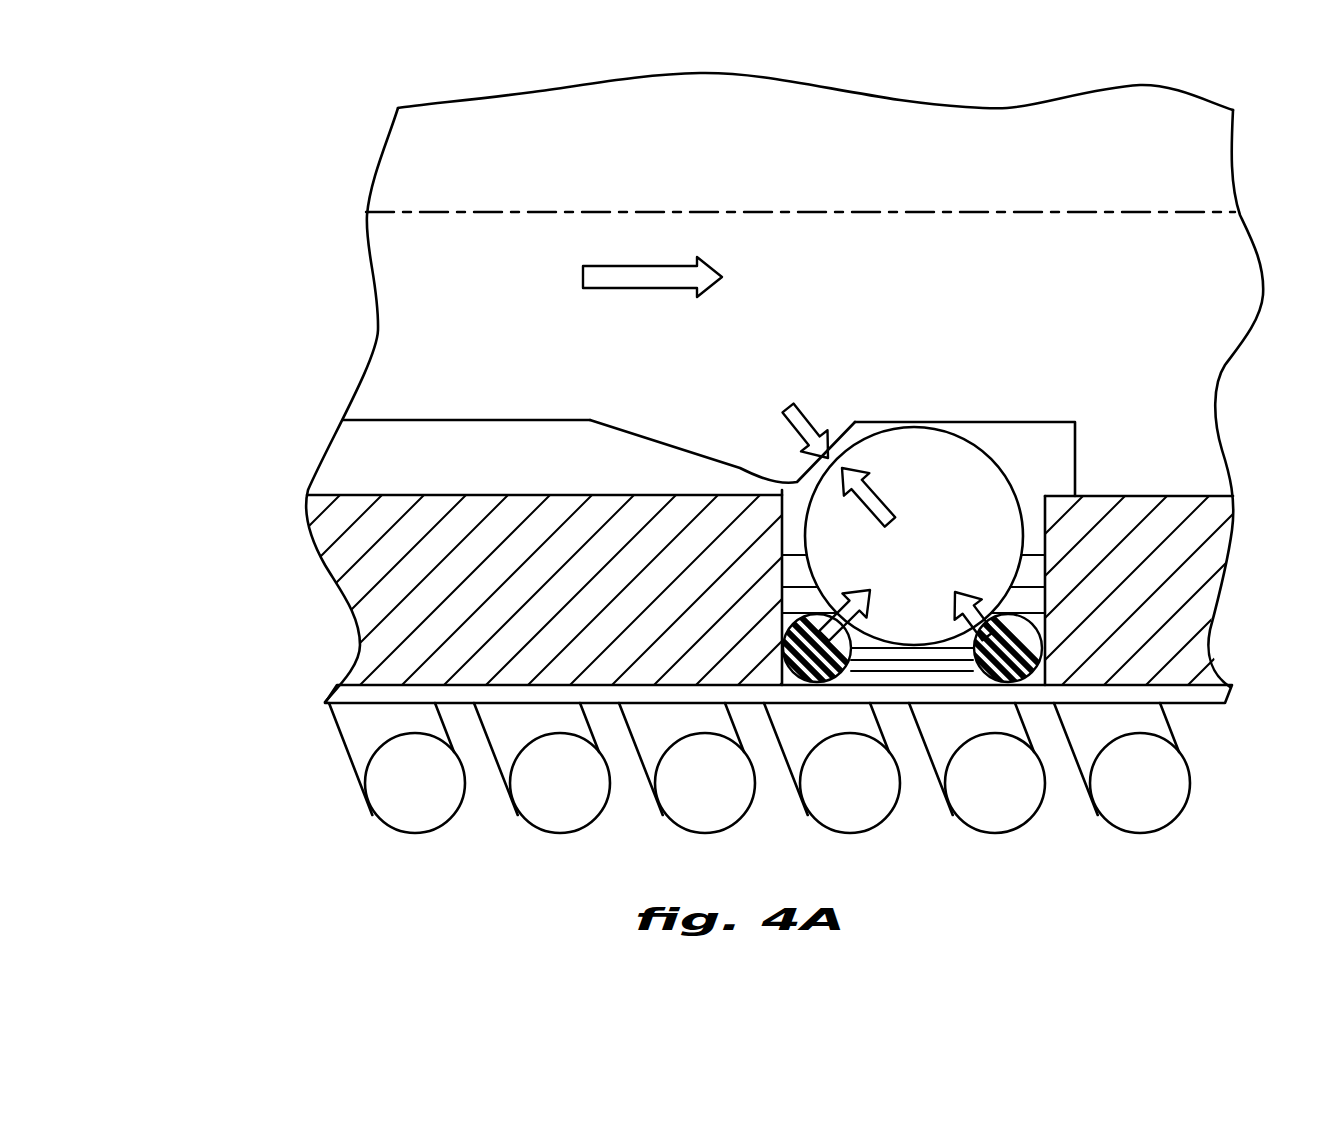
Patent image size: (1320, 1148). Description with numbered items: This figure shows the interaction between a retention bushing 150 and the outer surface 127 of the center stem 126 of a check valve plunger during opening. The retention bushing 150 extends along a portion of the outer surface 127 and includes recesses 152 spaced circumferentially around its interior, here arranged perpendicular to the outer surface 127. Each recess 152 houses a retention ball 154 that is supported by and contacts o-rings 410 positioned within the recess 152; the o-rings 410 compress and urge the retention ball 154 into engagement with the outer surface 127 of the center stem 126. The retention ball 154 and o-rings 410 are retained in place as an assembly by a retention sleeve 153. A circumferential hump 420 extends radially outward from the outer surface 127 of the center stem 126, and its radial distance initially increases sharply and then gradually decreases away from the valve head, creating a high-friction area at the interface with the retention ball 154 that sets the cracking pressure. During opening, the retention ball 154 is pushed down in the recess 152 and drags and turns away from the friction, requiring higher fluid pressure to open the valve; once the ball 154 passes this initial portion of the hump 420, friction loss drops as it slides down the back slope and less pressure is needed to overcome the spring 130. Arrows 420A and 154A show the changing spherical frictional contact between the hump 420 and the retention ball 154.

The center stem 126 is at (487, 348).
The outer surface 127 is at (420, 422).
The spring 130 is at (400, 798).
The retention bushing 150 is at (422, 607).
The recesses 152 is at (922, 667).
The retention sleeve 153 is at (1198, 697).
The retention ball 154 is at (1000, 472).
The arrow 154A is at (880, 500).
The o-rings 410 is at (782, 637).
The circumferential hump 420 is at (782, 517).
The arrow 420A is at (790, 412).